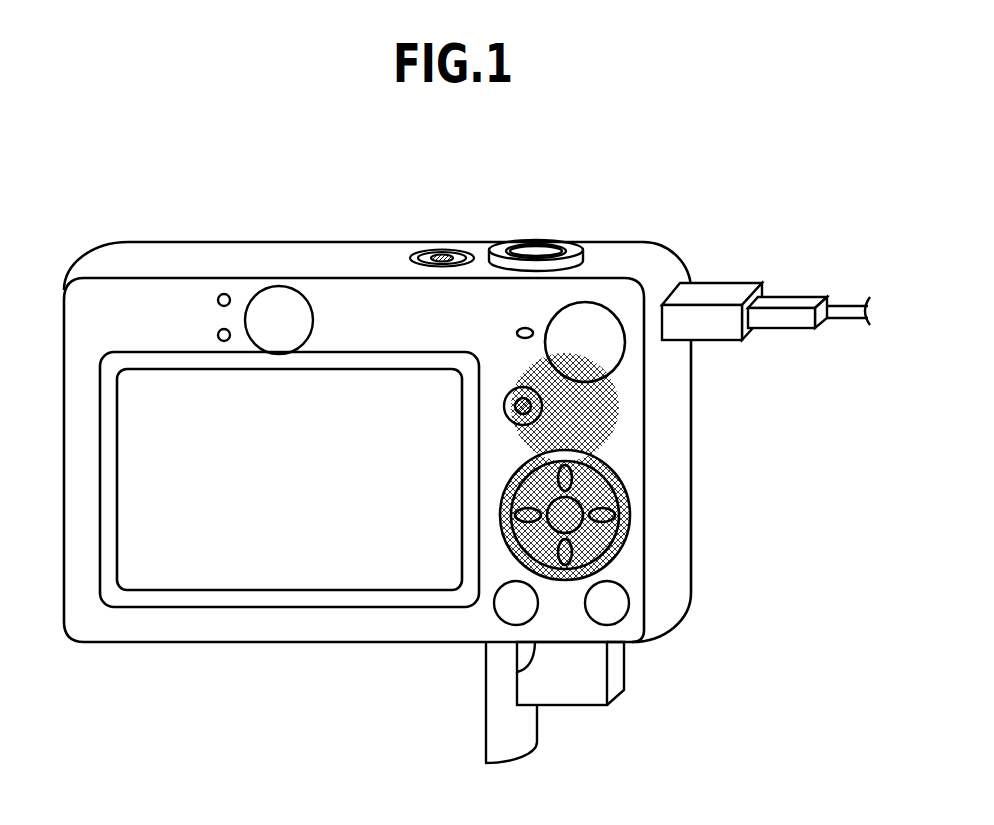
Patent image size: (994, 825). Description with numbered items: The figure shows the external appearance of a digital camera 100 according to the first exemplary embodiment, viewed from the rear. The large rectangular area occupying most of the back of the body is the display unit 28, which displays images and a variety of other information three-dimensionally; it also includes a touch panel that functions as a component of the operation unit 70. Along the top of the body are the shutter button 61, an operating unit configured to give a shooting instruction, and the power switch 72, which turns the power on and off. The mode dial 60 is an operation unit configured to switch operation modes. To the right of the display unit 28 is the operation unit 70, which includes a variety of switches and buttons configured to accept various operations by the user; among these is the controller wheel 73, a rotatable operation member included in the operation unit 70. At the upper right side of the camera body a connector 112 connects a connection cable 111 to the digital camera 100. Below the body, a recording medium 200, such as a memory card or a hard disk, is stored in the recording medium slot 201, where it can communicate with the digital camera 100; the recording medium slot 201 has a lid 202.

The digital camera 100 is at (169, 668).
The display unit 28 is at (182, 390).
The power switch 72 is at (441, 249).
The shutter button 61 is at (540, 243).
The mode dial 60 is at (597, 320).
The controller wheel 73 is at (498, 477).
The operation unit 70 is at (540, 273).
The connector 112 is at (682, 282).
The connection cable plug 111 is at (800, 295).
The recording medium 200 is at (600, 671).
The recording medium slot 201 is at (517, 672).
The lid 202 is at (528, 735).